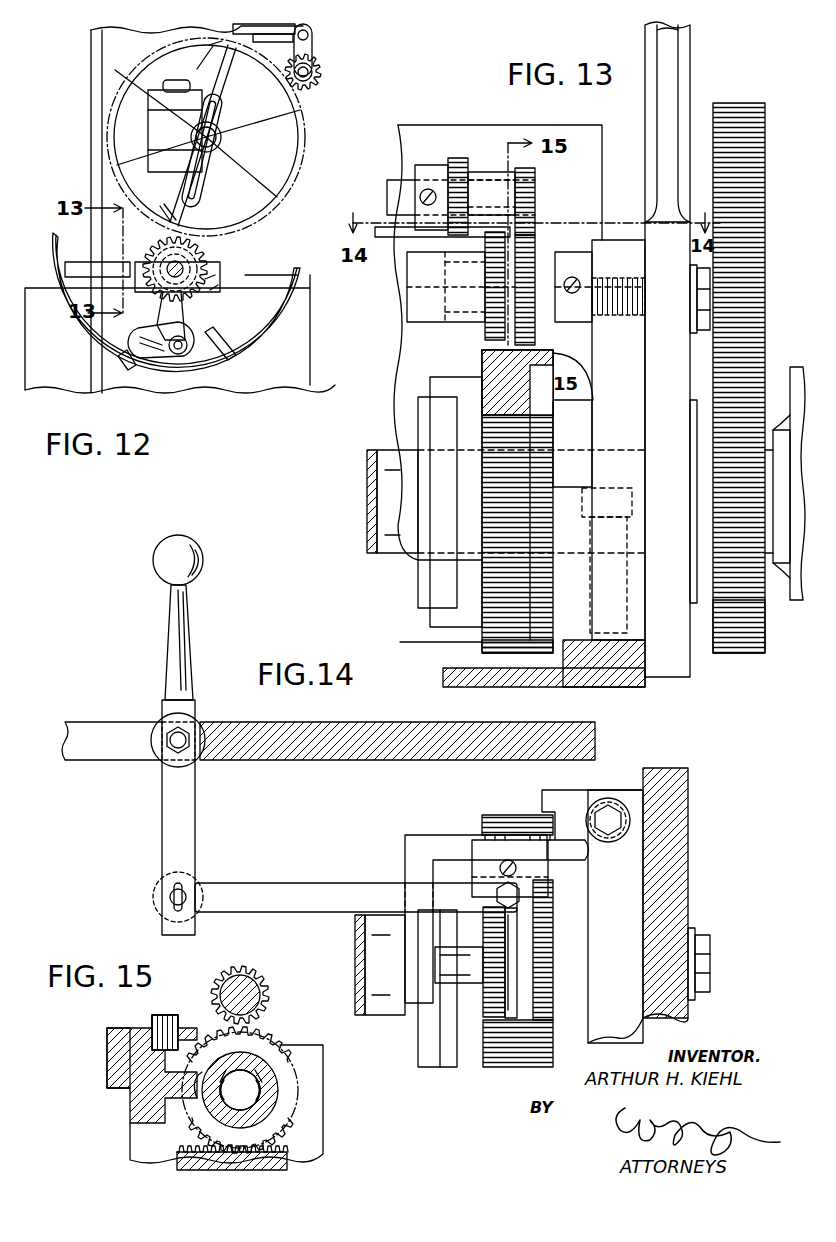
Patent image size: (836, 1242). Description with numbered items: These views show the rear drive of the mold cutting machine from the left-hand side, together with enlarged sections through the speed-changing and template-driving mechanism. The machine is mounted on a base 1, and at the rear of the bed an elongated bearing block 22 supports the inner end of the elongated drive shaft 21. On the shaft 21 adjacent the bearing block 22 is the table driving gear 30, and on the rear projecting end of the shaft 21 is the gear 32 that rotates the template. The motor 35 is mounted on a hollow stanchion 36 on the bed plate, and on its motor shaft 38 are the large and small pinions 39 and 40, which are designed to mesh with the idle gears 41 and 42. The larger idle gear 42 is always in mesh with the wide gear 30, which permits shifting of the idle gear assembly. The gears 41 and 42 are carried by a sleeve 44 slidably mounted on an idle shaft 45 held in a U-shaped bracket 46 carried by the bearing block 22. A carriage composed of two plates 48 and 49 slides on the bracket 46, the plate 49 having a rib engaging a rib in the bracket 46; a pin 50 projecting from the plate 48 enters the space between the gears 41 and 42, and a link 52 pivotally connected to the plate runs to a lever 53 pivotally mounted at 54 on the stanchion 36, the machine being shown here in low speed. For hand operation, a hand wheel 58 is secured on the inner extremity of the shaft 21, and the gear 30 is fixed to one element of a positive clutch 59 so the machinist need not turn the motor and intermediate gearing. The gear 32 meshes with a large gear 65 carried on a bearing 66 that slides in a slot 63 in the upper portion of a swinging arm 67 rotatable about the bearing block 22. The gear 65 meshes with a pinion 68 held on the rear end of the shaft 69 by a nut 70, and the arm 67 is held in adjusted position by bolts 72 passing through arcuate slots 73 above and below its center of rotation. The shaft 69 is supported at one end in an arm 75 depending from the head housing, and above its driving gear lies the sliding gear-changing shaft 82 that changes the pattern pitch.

In FIG. 12, the base 1 is at (303, 327).
In FIG. 12, the drive shaft 21 is at (170, 267).
In FIG. 13, the drive shaft 21 is at (368, 530).
In FIG. 14, the drive shaft 21 is at (358, 952).
In FIG. 12, the bearing block 22 is at (215, 268).
In FIG. 13, the bearing block 22 is at (588, 412).
In FIG. 14, the bearing block 22 is at (592, 790).
In FIG. 13, the table driving gear 30 is at (483, 645).
In FIG. 14, the table driving gear 30 is at (510, 818).
In FIG. 15, the table driving gear 30 is at (248, 1168).
In FIG. 12, the gear 32 is at (209, 291).
In FIG. 13, the gear 32 is at (742, 654).
In FIG. 12, the motor 35 is at (150, 124).
In FIG. 12, the hollow stanchion 36 is at (227, 258).
In FIG. 14, the hollow stanchion 36 is at (388, 722).
In FIG. 13, the motor shaft 38 is at (389, 192).
In FIG. 15, the motor shaft 38 is at (246, 984).
In FIG. 13, the large pinion 39 is at (460, 160).
In FIG. 13, the small pinion 40 is at (530, 171).
In FIG. 15, the small pinion 40 is at (268, 993).
In FIG. 13, the idle gear 41 is at (488, 330).
In FIG. 14, the idle gear 41 is at (484, 1003).
In FIG. 13, the idle gear 42 is at (536, 240).
In FIG. 14, the idle gear 42 is at (554, 1014).
In FIG. 15, the idle gear 42 is at (270, 1037).
In FIG. 15, the sleeve 44 is at (276, 1088).
In FIG. 13, the idle shaft 45 is at (462, 300).
In FIG. 14, the idle shaft 45 is at (463, 947).
In FIG. 15, the idle shaft 45 is at (262, 1100).
In FIG. 13, the U-shaped bracket 46 is at (407, 302).
In FIG. 14, the U-shaped bracket 46 is at (430, 840).
In FIG. 15, the U-shaped bracket 46 is at (130, 1114).
In FIG. 15, the plate 48 is at (162, 1078).
In FIG. 14, the plate 49 is at (549, 850).
In FIG. 15, the plate 49 is at (107, 1058).
In FIG. 14, the pin 50 is at (519, 912).
In FIG. 15, the pin 50 is at (190, 1108).
In FIG. 13, the link 52 is at (422, 237).
In FIG. 14, the link 52 is at (305, 883).
In FIG. 14, the lever 53 is at (196, 825).
In FIG. 14, the pivot 54 is at (190, 733).
In FIG. 12, the hand wheel 58 is at (291, 270).
In FIG. 13, the hand wheel 58 is at (795, 587).
In FIG. 13, the positive clutch 59 is at (432, 600).
In FIG. 14, the positive clutch 59 is at (425, 1046).
In FIG. 12, the slot 63 is at (203, 181).
In FIG. 12, the large gear 65 is at (300, 132).
In FIG. 13, the large gear 65 is at (765, 235).
In FIG. 12, the bearing 66 is at (208, 135).
In FIG. 12, the swinging arm 67 is at (175, 317).
In FIG. 13, the swinging arm 67 is at (648, 190).
In FIG. 14, the swinging arm 67 is at (689, 895).
In FIG. 12, the pinion 68 is at (315, 81).
In FIG. 12, the shaft 69 is at (311, 66).
In FIG. 12, the nut 70 is at (311, 72).
In FIG. 12, the bolt 72 is at (176, 355).
In FIG. 13, the bolt 72 is at (702, 333).
In FIG. 14, the bolt 72 is at (705, 934).
In FIG. 12, the arcuate slot 73 is at (160, 350).
In FIG. 13, the arcuate slot 73 is at (668, 318).
In FIG. 12, the arm 75 is at (311, 52).
In FIG. 12, the gear-changing shaft 82 is at (309, 28).